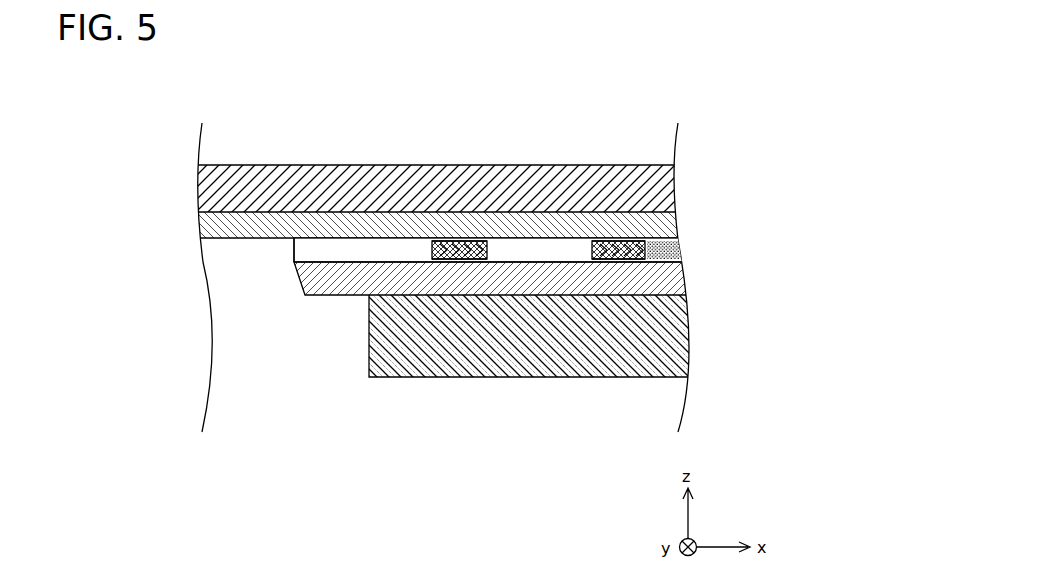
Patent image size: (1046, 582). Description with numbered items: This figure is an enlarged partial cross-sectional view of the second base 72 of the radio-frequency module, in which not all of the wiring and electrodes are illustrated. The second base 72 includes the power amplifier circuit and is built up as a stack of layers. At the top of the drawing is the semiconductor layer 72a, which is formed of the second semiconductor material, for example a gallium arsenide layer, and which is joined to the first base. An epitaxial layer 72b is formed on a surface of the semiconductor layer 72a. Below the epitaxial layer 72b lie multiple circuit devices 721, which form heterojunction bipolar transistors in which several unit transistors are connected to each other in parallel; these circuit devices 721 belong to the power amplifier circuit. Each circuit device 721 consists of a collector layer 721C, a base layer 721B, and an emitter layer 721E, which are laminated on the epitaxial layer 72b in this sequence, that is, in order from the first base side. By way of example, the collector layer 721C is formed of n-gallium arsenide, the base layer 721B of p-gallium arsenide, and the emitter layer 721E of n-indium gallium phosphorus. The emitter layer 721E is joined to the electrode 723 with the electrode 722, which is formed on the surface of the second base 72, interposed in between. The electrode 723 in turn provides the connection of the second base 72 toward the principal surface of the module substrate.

The second base 72 is at (442, 223).
The semiconductor layer 72a is at (216, 190).
The epitaxial layer 72b is at (217, 227).
The circuit device 721 is at (497, 251).
The base layer 721B is at (432, 250).
The collector layer 721C is at (432, 243).
The emitter layer 721E is at (432, 257).
The electrode 722 is at (682, 277).
The electrode 723 is at (682, 327).